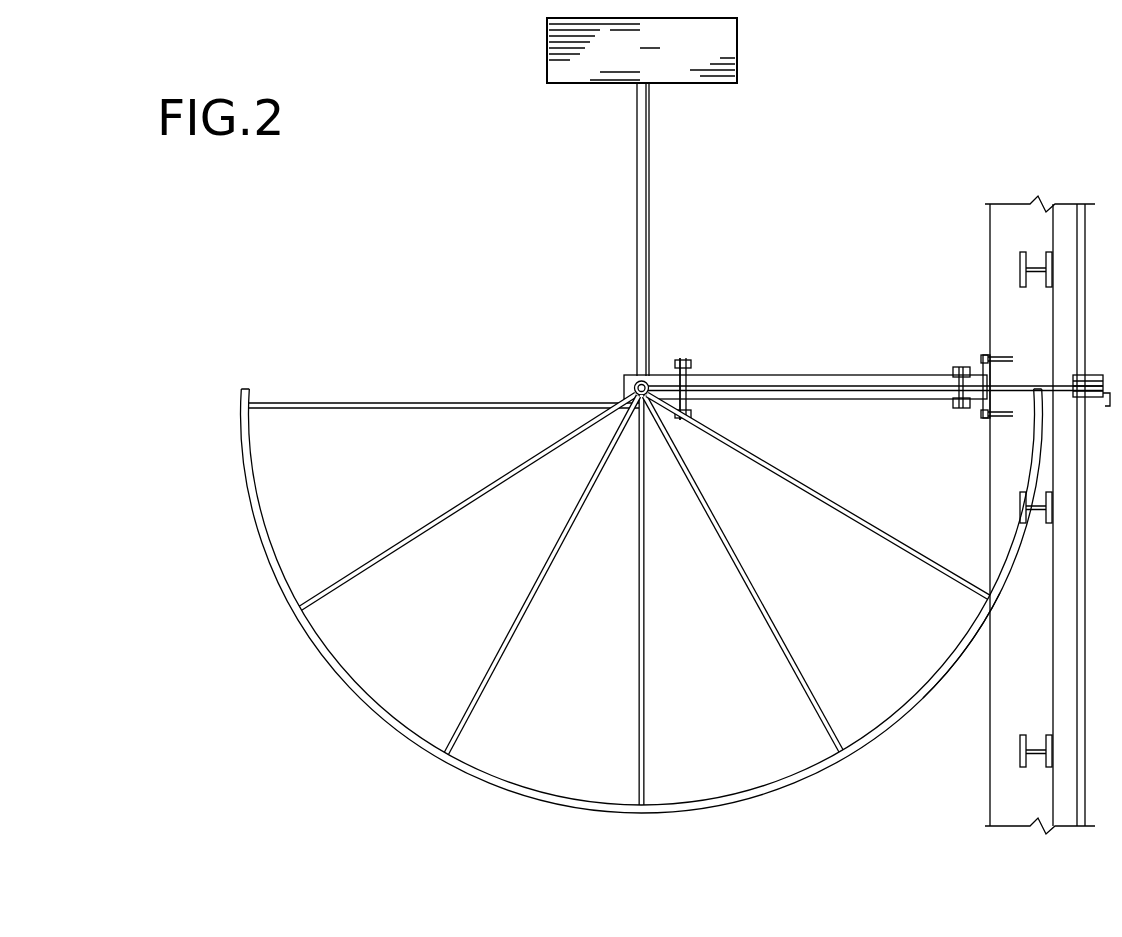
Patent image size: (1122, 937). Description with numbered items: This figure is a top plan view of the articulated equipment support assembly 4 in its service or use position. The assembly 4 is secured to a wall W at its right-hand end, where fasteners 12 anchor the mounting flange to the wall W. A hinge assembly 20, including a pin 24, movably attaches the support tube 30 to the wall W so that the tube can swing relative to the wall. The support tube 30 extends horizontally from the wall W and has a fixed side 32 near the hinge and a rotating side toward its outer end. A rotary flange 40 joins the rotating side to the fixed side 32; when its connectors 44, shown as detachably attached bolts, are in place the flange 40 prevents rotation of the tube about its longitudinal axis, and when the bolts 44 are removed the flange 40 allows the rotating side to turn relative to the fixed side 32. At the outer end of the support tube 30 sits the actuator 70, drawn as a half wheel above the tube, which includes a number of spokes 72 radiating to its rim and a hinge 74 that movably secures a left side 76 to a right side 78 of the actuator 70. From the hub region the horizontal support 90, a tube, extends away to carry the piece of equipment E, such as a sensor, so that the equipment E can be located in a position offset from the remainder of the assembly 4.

The equipment E is at (739, 40).
The horizontal support 90 is at (652, 212).
The articulated equipment support assembly 4 is at (318, 270).
The support tube 30 is at (805, 375).
The rotary flange 40 is at (684, 358).
The connectors 44 is at (698, 364).
The fixed side 32 is at (932, 356).
The fasteners 12 is at (1005, 356).
The hinge assembly 20 is at (957, 408).
The pin 24 is at (950, 401).
The wall W is at (990, 800).
The actuator 70 is at (488, 790).
The left side 76 is at (308, 640).
The hinge 74 is at (638, 802).
The spokes 72 is at (800, 690).
The right side 78 is at (930, 690).